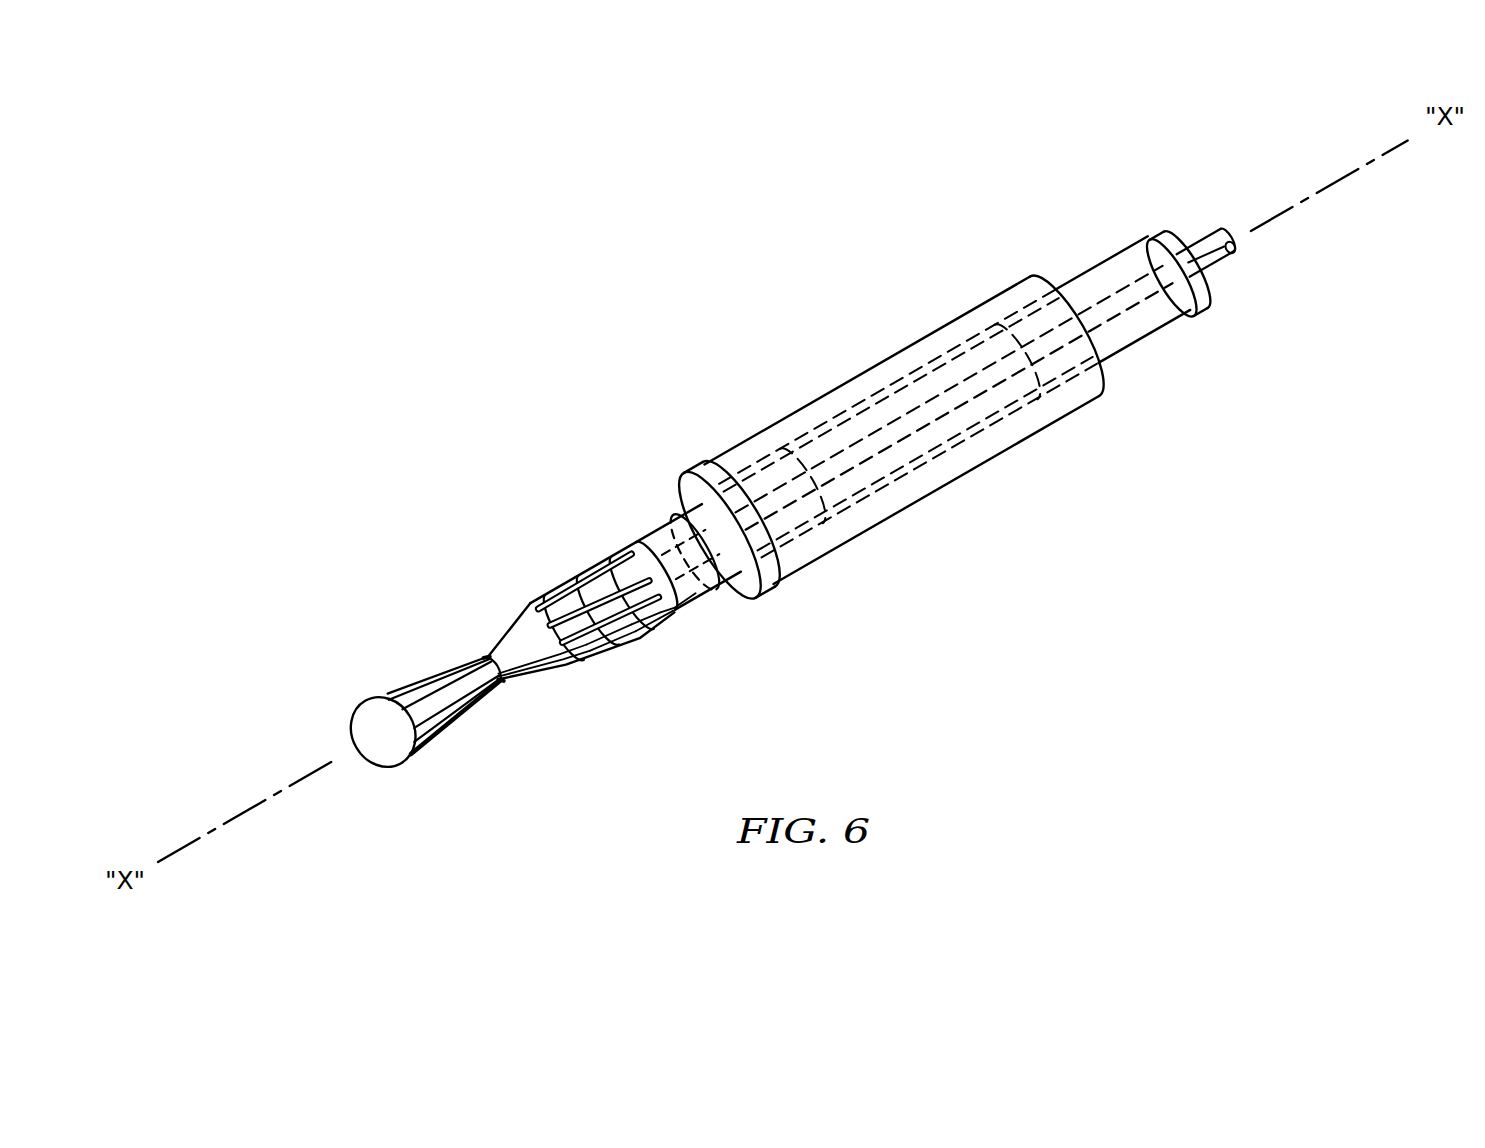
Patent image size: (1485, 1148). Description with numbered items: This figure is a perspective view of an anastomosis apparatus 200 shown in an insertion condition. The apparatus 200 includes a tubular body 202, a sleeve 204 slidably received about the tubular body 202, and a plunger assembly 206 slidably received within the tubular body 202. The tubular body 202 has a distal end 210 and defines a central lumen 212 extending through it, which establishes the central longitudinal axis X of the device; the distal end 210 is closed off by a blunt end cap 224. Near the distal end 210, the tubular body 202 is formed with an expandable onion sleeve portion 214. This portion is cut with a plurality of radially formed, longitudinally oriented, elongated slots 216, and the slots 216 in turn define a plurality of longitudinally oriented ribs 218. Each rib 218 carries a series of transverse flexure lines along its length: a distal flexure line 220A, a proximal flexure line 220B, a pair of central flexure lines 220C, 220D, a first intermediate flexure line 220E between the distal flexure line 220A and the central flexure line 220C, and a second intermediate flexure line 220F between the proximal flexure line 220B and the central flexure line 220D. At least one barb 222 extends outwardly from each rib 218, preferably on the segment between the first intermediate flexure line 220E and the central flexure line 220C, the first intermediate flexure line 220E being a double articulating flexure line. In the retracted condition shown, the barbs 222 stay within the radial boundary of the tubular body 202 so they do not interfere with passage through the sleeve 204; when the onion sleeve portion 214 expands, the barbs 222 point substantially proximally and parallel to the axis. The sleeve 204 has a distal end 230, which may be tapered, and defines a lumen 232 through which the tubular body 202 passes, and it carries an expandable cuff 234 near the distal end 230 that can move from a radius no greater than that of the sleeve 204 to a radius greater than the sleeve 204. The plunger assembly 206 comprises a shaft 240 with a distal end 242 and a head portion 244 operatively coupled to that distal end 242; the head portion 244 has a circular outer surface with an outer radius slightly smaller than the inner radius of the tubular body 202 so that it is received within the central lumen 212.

The anastomosis apparatus 200 is at (300, 606).
The tubular body 202 is at (1202, 303).
The sleeve 204 is at (1122, 355).
The plunger assembly 206 is at (1222, 262).
The distal end 210 is at (620, 543).
The central lumen 212 is at (1183, 252).
The expandable onion sleeve portion 214 is at (530, 568).
The elongated slots 216 is at (587, 573).
The ribs 218 is at (588, 557).
The distal flexure line 220A is at (422, 752).
The proximal flexure line 220B is at (673, 610).
The central flexure line 220C is at (571, 664).
The central flexure line 220D is at (607, 647).
The first intermediate flexure line 220E is at (498, 684).
The second intermediate flexure line 220F is at (647, 621).
The barb 222 is at (483, 658).
The blunt end cap 224 is at (367, 693).
The distal end 230 is at (653, 531).
The lumen 232 is at (1180, 312).
The expandable cuff 234 is at (908, 392).
The shaft 240 is at (1210, 248).
The distal end 242 is at (767, 589).
The head portion 244 is at (671, 515).